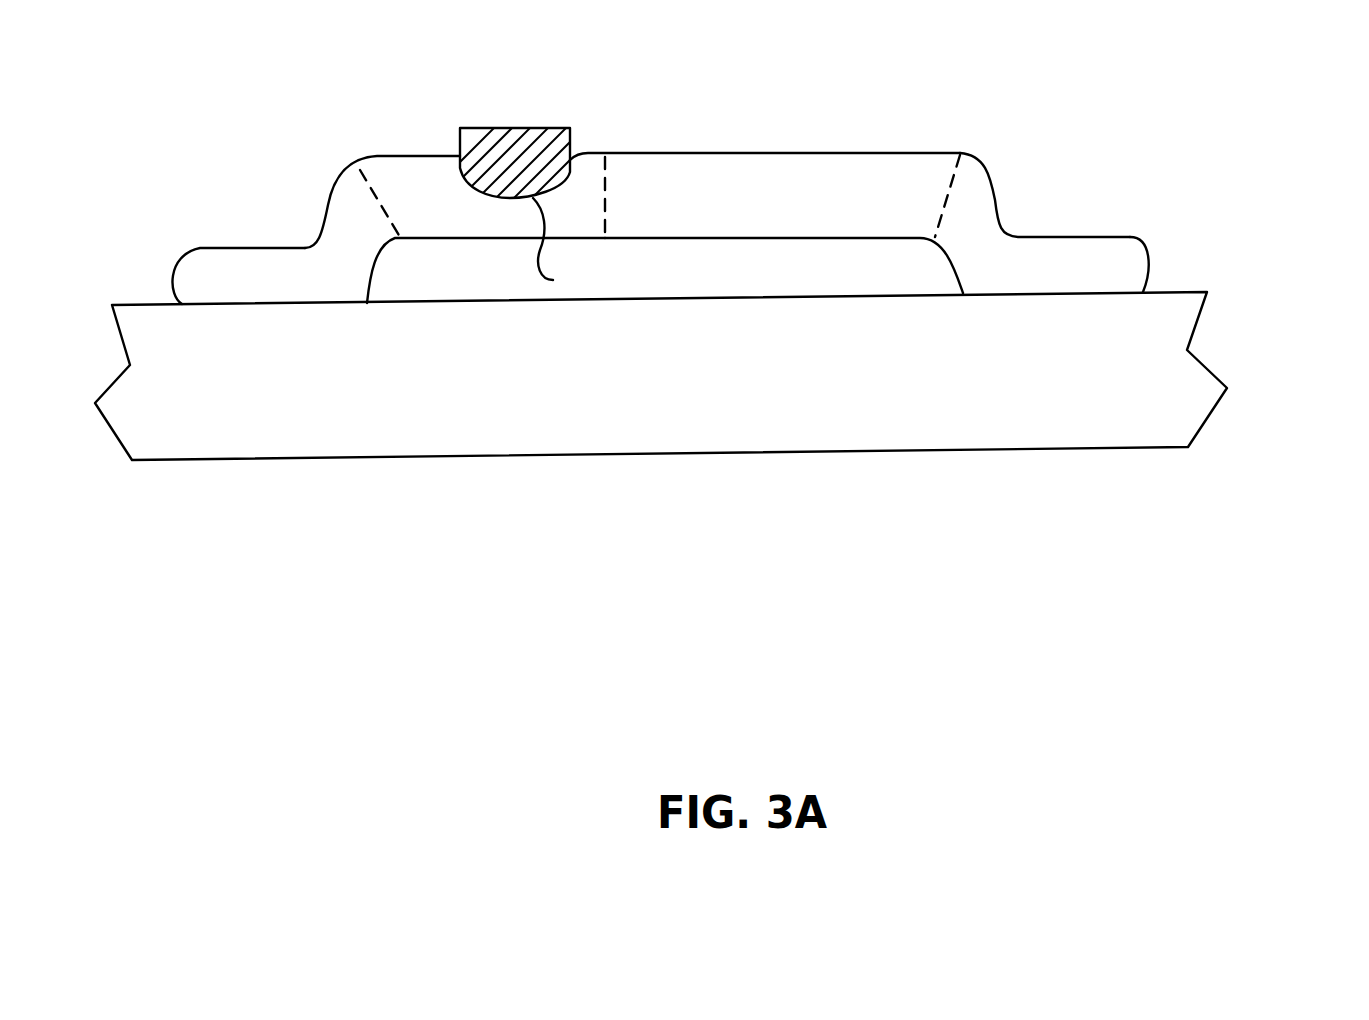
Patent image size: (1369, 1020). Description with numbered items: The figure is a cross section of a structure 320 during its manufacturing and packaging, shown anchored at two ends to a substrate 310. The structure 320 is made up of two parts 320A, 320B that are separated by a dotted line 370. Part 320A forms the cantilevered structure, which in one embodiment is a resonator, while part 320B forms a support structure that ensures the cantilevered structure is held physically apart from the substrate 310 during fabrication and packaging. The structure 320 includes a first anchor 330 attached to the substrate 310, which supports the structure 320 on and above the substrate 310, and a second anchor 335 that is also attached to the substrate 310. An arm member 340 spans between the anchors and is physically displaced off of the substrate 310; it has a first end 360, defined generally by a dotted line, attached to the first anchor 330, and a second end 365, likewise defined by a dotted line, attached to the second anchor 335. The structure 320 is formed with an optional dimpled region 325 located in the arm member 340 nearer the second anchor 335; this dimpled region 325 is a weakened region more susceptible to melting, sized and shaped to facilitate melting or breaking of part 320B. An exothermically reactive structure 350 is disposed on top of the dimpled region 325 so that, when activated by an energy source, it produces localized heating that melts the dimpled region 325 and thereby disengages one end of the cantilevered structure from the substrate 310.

The substrate 310 is at (868, 422).
The structure 320 is at (736, 186).
The first part of the structure 320A is at (1000, 150).
The second part of the structure 320B is at (330, 197).
The dimpled region 325 is at (565, 246).
The first anchor 330 is at (1112, 257).
The second anchor 335 is at (247, 263).
The arm member 340 is at (832, 183).
The exothermically reactive structure 350 is at (490, 130).
The first end 360 is at (947, 195).
The second end 365 is at (387, 200).
The dotted line 370 is at (608, 198).